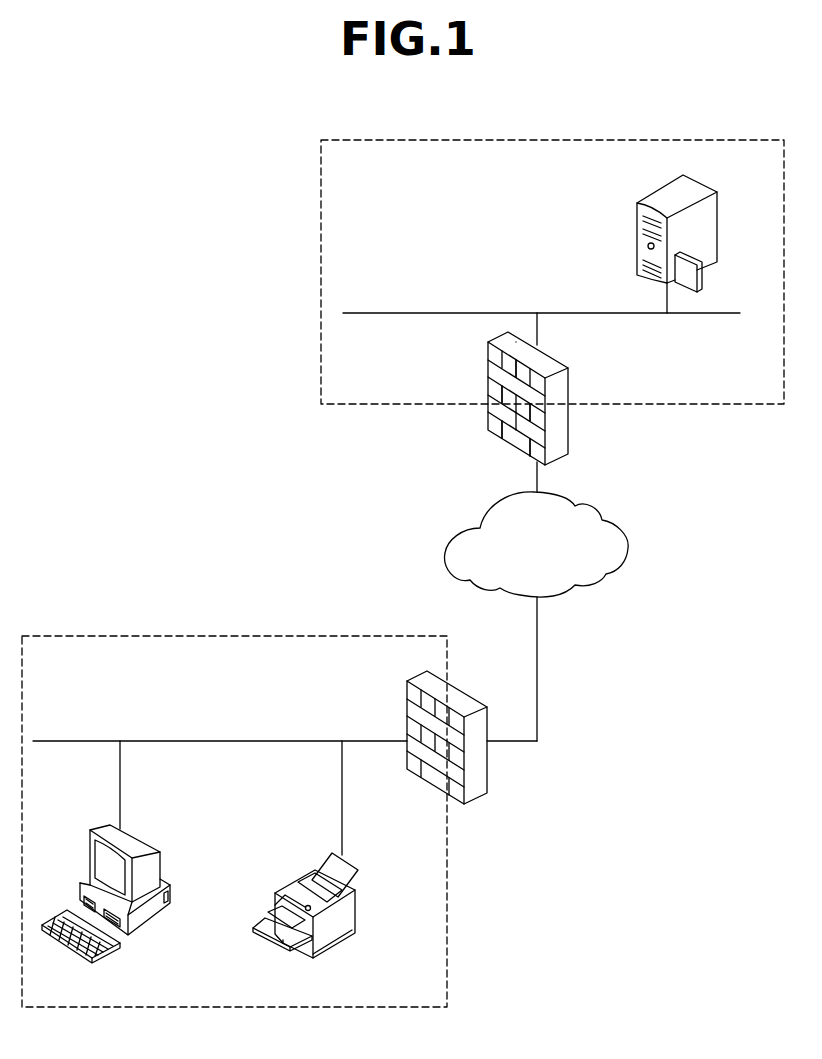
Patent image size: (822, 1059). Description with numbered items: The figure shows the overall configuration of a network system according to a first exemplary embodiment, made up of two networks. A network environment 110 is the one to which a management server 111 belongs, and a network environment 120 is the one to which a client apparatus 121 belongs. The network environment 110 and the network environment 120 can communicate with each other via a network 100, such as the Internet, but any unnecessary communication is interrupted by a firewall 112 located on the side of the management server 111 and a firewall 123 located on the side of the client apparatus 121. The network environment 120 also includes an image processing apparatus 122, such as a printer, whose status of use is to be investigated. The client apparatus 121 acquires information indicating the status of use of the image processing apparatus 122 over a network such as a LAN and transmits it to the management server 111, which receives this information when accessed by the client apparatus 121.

The network 100 is at (628, 545).
The network environment 110 is at (597, 140).
The management server 111 is at (636, 243).
The firewall 112 is at (567, 375).
The network environment 120 is at (253, 636).
The client apparatus 121 is at (177, 892).
The image processing apparatus 122 is at (357, 910).
The firewall 123 is at (405, 700).